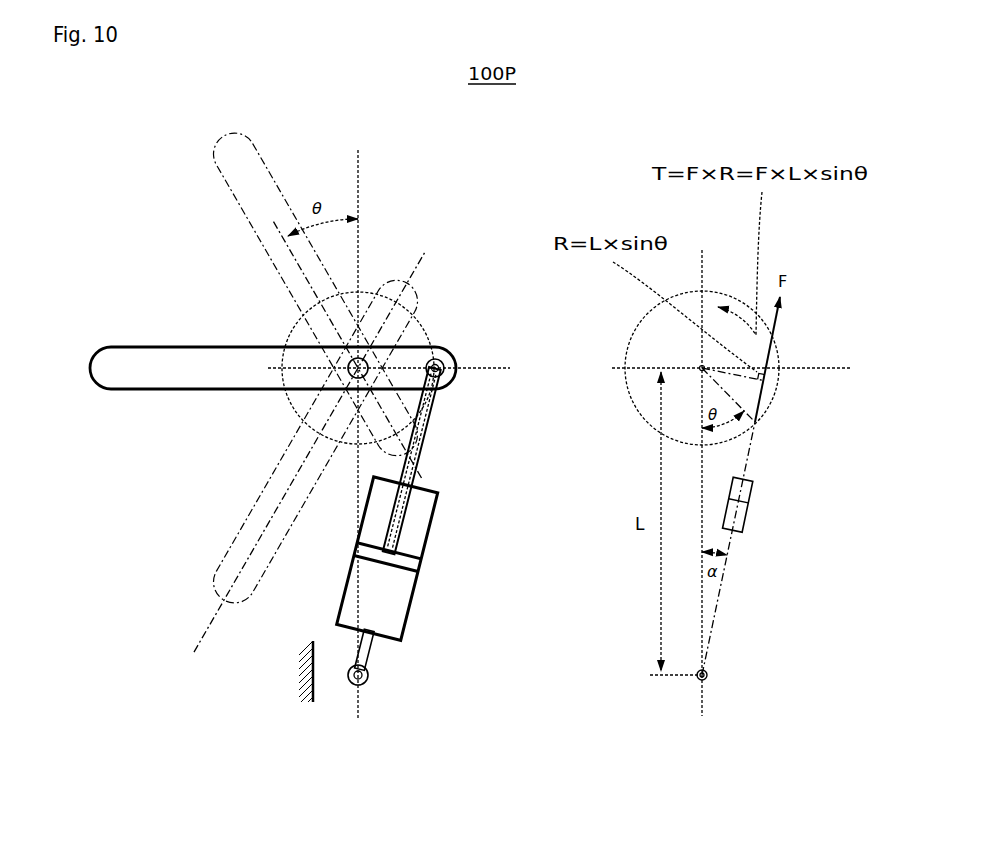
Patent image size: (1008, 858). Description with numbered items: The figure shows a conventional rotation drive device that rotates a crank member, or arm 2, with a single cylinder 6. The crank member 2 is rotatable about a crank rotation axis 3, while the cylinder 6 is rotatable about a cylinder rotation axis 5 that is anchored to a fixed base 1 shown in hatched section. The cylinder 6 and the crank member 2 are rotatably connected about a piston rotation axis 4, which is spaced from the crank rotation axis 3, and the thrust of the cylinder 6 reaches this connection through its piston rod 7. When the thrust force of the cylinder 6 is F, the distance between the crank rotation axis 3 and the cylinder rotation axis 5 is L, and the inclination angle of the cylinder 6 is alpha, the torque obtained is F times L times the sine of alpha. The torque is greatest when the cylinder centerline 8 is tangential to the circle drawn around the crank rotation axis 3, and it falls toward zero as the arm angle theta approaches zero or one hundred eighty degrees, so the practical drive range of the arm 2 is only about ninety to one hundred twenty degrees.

The fixed base / vehicle body 1 is at (307, 677).
The crank member (arm) 2 is at (124, 346).
The crank rotation axis 3 is at (349, 364).
The piston rotation axis 4 is at (442, 360).
The cylinder rotation axis 5 is at (370, 676).
The cylinder 6 is at (424, 543).
The piston rod 7 is at (431, 418).
The cylinder centerline 8 is at (721, 595).